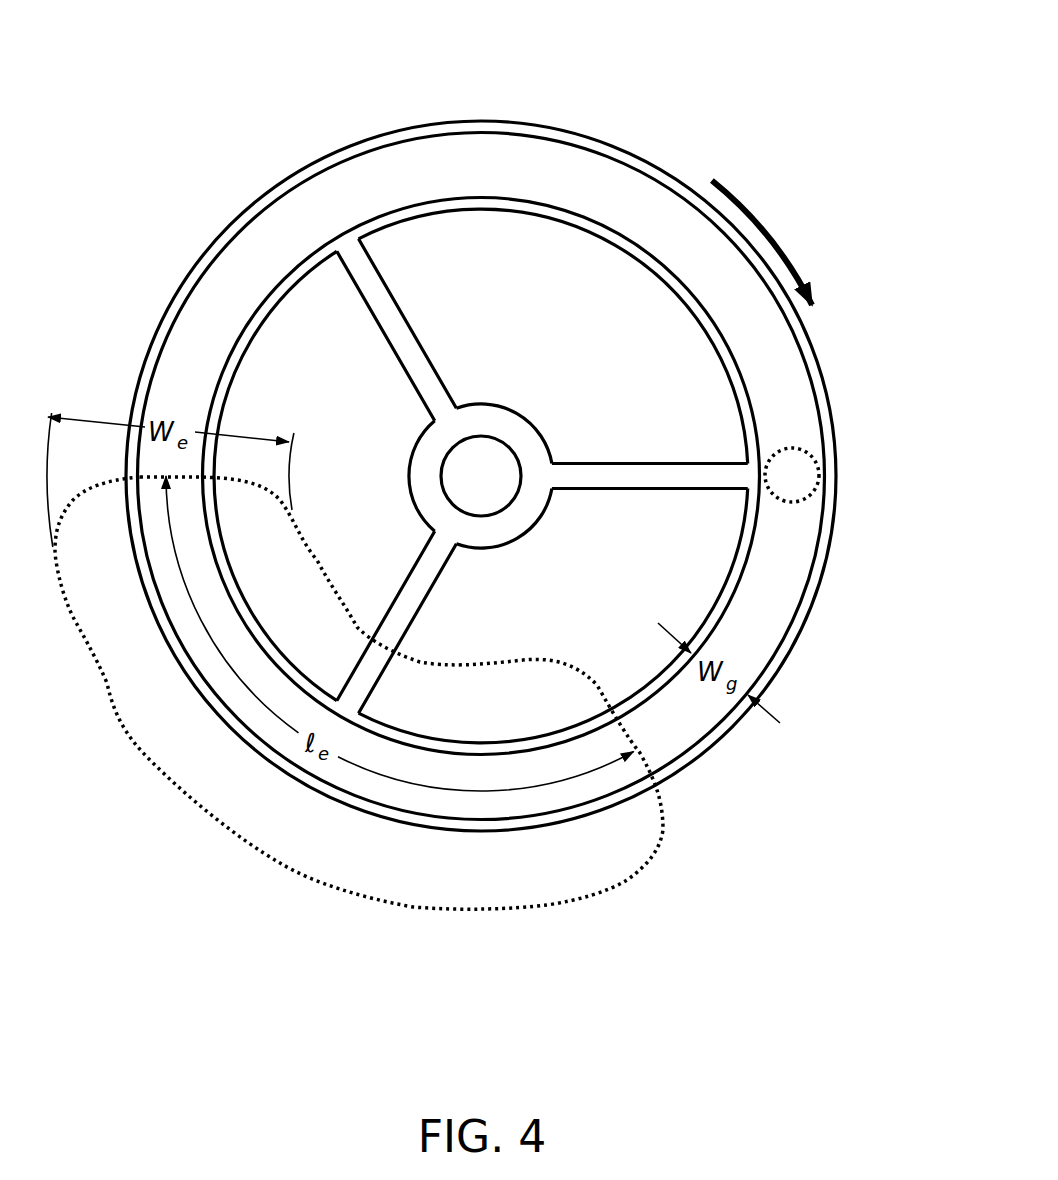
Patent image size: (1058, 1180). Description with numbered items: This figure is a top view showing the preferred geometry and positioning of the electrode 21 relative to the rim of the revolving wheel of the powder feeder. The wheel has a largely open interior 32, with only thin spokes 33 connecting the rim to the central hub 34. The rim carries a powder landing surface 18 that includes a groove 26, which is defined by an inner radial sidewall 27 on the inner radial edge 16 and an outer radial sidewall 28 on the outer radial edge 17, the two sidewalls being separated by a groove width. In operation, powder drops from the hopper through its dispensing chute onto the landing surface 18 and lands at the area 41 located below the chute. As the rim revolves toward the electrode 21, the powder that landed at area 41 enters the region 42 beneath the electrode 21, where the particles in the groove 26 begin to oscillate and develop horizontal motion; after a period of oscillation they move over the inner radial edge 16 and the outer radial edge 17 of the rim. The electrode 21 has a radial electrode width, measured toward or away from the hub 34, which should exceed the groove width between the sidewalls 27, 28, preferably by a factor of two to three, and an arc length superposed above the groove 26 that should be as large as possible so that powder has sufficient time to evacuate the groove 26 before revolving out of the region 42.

The inner radial edge 16 is at (532, 217).
The outer radial edge 17 is at (519, 121).
The powder landing surface 18 is at (783, 373).
The electrode 21 is at (665, 832).
The groove 26 is at (372, 163).
The inner radial sidewall 27 is at (667, 267).
The outer radial sidewall 28 is at (645, 170).
The interior 32 is at (327, 352).
The spokes 33 is at (350, 282).
The hub 34 is at (489, 477).
The area 41 is at (810, 475).
The region 42 is at (588, 790).